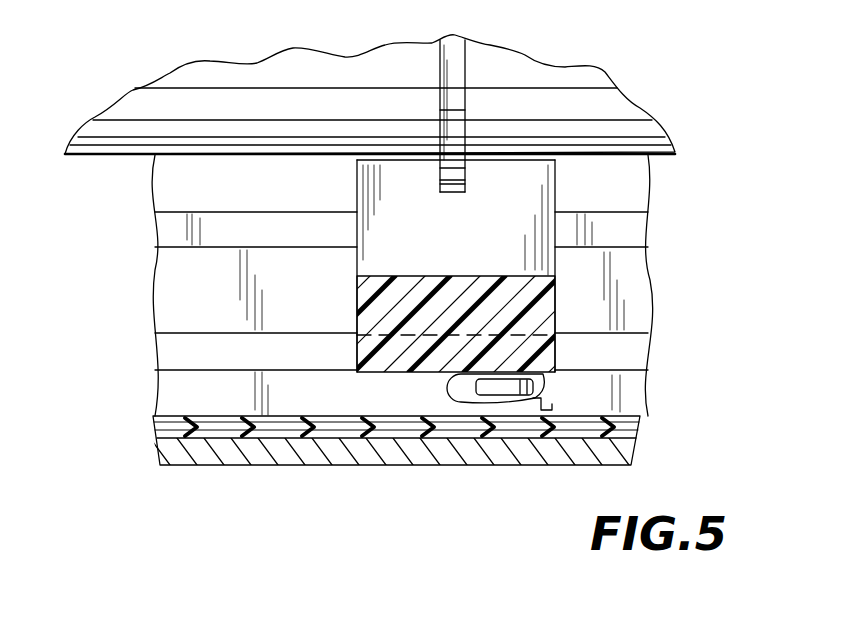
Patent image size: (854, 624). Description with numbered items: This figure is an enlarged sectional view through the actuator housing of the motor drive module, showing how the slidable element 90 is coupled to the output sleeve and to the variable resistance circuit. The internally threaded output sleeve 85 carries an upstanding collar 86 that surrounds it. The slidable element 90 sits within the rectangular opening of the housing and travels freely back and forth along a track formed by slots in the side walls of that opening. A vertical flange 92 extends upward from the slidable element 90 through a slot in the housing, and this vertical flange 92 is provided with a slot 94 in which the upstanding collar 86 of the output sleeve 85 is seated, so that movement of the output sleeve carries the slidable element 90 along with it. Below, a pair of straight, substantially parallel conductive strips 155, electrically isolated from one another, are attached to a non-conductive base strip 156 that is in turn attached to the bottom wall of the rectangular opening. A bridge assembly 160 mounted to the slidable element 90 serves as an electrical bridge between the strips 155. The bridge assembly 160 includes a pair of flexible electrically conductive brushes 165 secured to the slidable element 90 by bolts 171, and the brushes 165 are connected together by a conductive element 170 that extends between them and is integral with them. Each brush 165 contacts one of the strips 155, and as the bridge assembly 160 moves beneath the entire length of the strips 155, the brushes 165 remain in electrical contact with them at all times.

The output sleeve 85 is at (620, 115).
The upstanding collar 86 is at (455, 68).
The slidable element 90 is at (545, 290).
The vertical flange 92 is at (535, 190).
The slot 94 is at (450, 194).
The conductive strips 155 is at (353, 415).
The non-conductive base strip 156 is at (233, 428).
The bridge assembly 160 is at (532, 412).
The conductive brushes 165 is at (455, 384).
The conductive element 170 is at (543, 374).
The bolts 171 is at (553, 403).